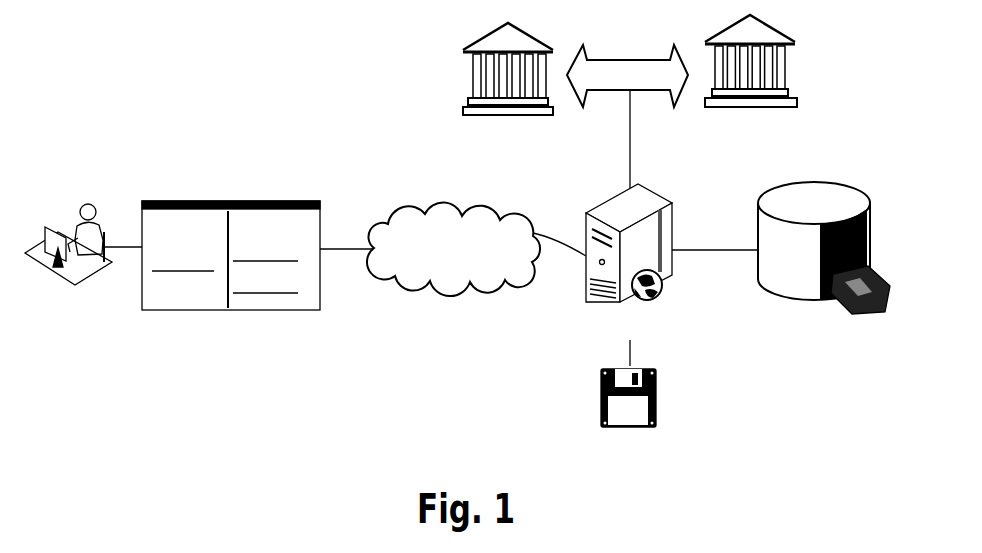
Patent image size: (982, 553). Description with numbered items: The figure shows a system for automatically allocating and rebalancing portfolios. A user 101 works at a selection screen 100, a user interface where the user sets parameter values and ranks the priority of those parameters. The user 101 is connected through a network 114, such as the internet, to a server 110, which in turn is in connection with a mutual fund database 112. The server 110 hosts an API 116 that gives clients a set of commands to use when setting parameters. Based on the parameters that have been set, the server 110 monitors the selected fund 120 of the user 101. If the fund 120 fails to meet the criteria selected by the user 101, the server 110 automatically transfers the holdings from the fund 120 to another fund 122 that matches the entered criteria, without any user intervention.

The selection screen 100 is at (231, 272).
The user 101 is at (68, 261).
The server 110 is at (630, 302).
The mutual fund database 112 is at (824, 258).
The network 114 is at (453, 250).
The API 116 is at (628, 415).
The selected fund 120 is at (508, 80).
The another fund 122 is at (751, 74).